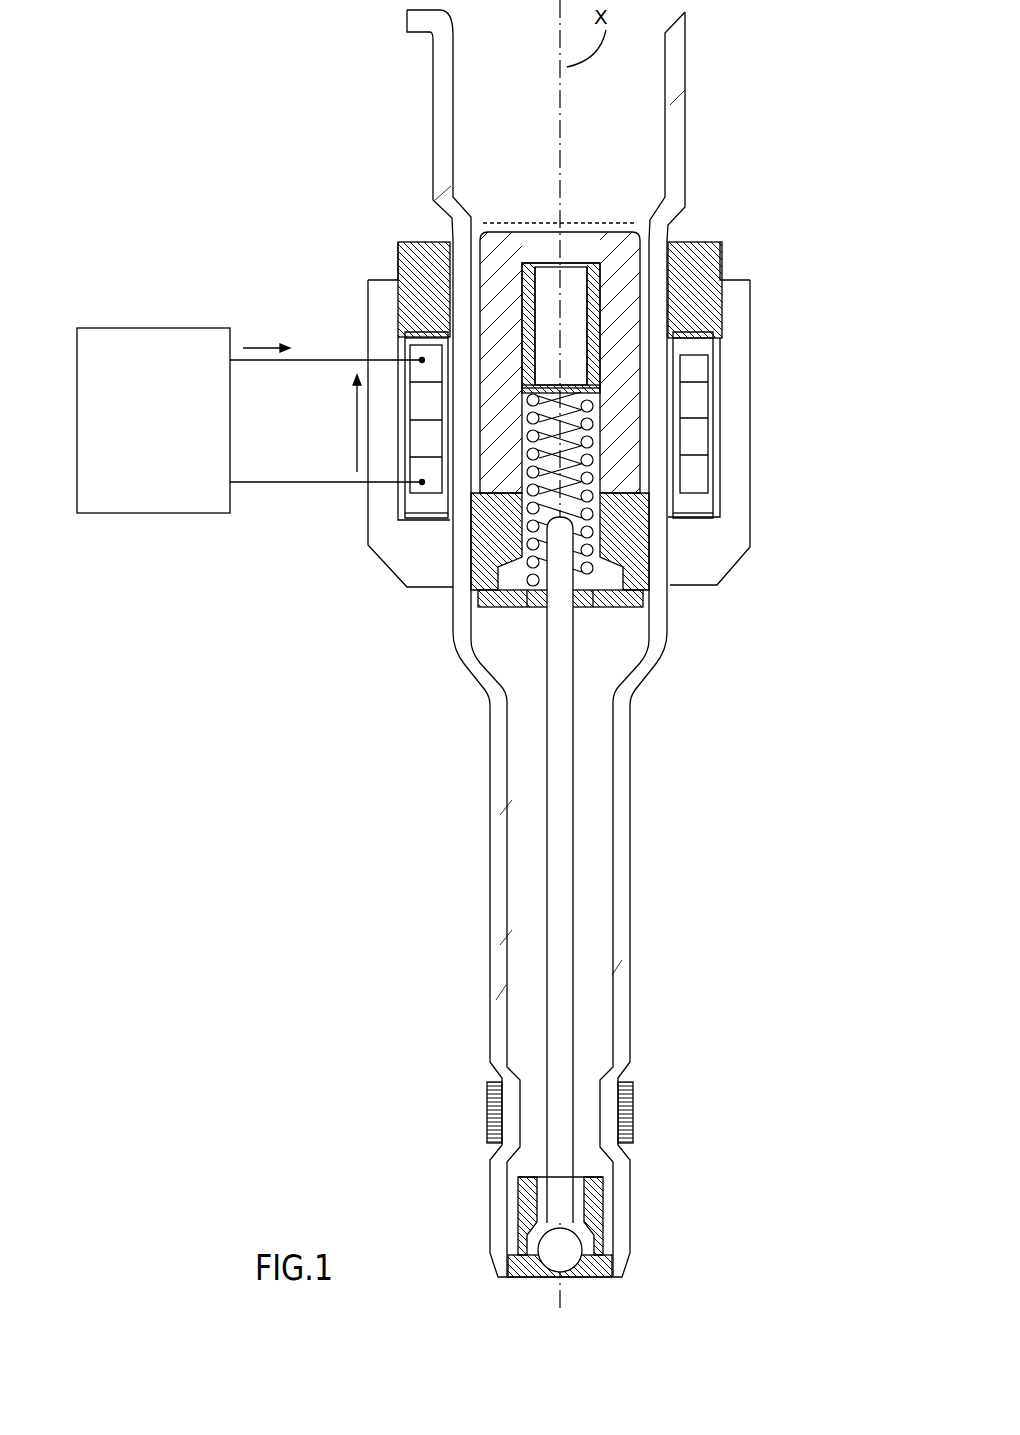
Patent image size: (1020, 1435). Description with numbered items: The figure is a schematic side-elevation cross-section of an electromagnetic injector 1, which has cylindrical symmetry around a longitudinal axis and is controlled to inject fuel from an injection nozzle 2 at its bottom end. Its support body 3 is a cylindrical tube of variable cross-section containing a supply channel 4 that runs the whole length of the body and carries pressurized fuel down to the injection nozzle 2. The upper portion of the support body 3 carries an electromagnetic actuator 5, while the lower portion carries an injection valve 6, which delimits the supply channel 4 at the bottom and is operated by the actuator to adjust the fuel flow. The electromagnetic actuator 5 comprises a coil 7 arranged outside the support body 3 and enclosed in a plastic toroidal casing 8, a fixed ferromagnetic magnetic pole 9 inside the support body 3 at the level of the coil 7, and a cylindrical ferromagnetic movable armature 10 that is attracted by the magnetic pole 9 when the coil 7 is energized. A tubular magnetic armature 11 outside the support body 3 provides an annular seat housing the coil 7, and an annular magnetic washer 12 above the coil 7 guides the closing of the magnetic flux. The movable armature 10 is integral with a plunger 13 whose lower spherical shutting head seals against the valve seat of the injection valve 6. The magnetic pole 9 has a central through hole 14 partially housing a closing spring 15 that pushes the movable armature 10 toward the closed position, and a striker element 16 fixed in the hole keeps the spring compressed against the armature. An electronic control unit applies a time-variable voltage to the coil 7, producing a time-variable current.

The electromagnetic injector 1 is at (305, 1022).
The injection nozzle 2 is at (533, 1312).
The support body 3 is at (675, 167).
The supply channel 4 is at (496, 99).
The electromagnetic actuator 5 is at (300, 570).
The injection valve 6 is at (601, 1267).
The coil 7 is at (693, 400).
The toroidal casing 8 is at (700, 345).
The magnetic pole 9 is at (633, 265).
The movable armature 10 is at (632, 619).
The tubular magnetic armature 11 is at (392, 560).
The magnetic washer 12 is at (423, 244).
The plunger 13 is at (563, 833).
The central through hole 14 is at (580, 234).
The closing spring 15 is at (618, 540).
The striker element 16 is at (527, 262).